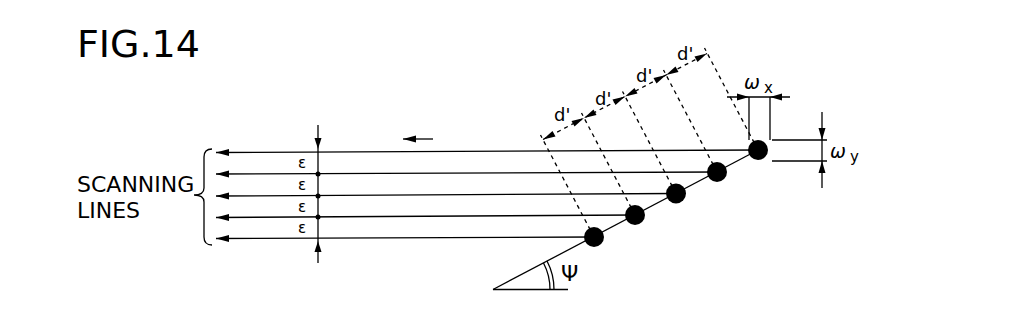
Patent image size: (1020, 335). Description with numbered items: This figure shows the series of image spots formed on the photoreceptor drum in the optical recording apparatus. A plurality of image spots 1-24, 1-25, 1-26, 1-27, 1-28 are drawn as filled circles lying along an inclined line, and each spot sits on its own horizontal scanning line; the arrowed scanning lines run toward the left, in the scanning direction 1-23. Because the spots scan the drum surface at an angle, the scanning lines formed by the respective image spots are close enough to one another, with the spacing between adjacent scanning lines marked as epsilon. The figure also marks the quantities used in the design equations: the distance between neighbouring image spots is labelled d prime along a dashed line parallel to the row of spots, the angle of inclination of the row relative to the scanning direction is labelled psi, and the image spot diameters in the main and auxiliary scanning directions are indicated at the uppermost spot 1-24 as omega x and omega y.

The scanning direction 1-23 is at (431, 139).
The image spot 1-24 is at (765, 159).
The image spot 1-25 is at (722, 182).
The image spot 1-26 is at (678, 203).
The image spot 1-27 is at (636, 225).
The image spot 1-28 is at (596, 247).